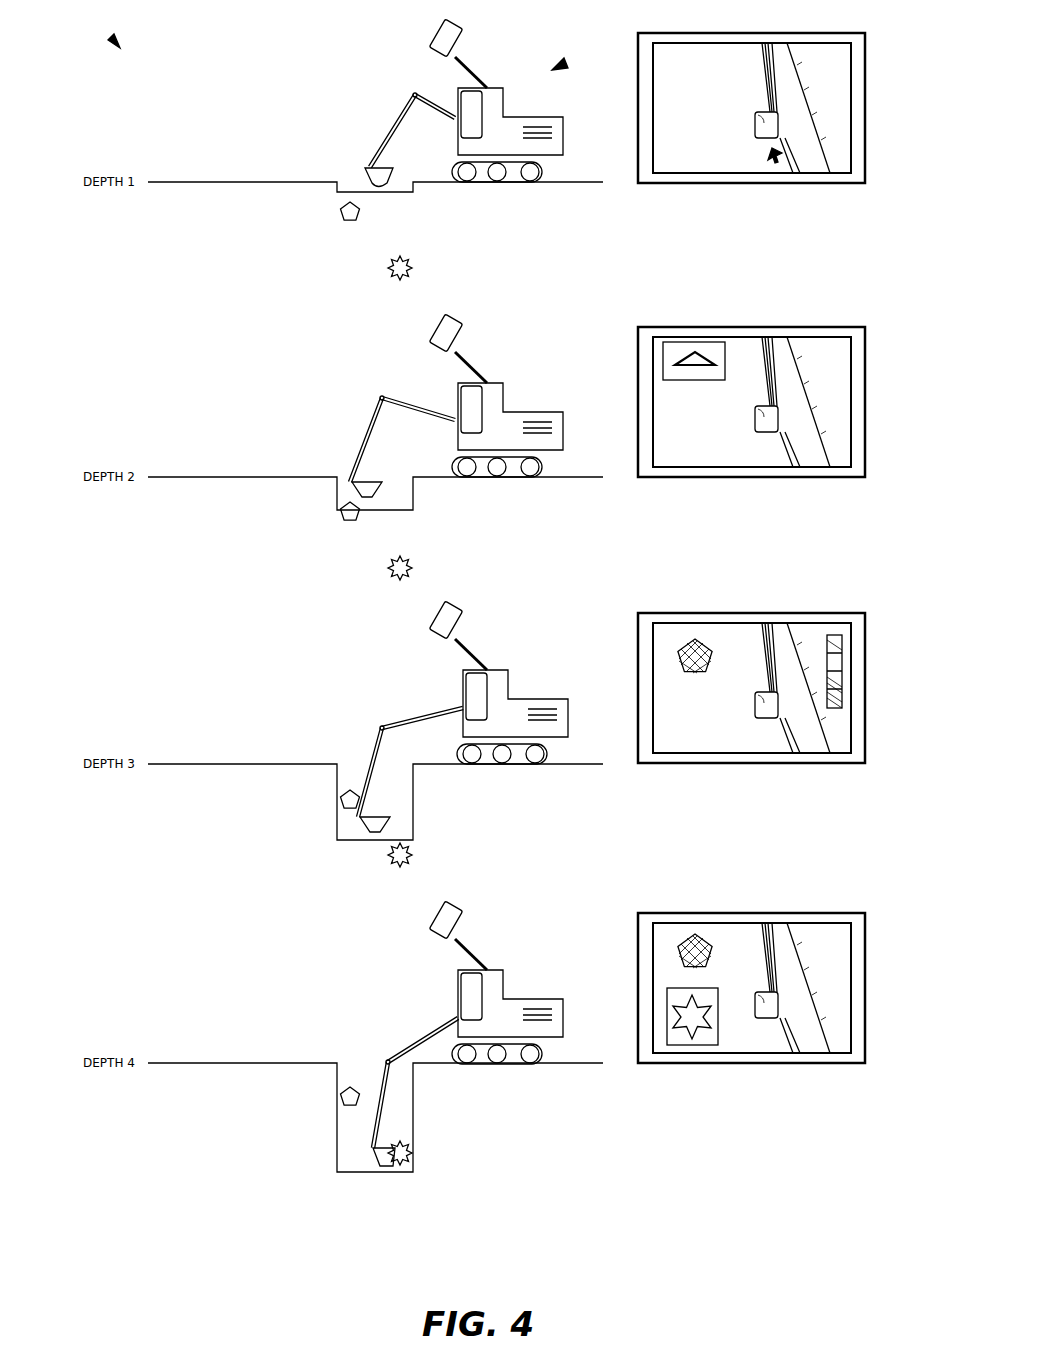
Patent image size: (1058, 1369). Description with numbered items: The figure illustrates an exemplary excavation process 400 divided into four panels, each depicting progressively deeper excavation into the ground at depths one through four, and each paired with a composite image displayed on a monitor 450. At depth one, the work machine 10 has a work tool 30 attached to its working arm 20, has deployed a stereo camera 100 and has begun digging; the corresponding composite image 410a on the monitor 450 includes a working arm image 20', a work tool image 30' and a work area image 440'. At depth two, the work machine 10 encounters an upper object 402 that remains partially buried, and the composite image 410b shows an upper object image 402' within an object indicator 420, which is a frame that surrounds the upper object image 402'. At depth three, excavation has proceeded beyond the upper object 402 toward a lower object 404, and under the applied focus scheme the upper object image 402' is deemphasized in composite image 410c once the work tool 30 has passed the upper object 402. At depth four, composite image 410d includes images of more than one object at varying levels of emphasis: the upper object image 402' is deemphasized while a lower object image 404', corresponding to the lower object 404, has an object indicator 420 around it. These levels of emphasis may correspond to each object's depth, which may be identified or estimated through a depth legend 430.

The excavation process 400 is at (116, 44).
The work machine 10 is at (562, 64).
The stereo camera 100 is at (458, 27).
The working arm 20 is at (393, 130).
The work tool 30 is at (346, 157).
The upper object 402 is at (311, 676).
The lower object 404 is at (397, 711).
The monitor 450 is at (866, 72).
The composite image 410a is at (707, 165).
The composite image 410b is at (695, 458).
The composite image 410c is at (710, 745).
The composite image 410d is at (770, 1045).
The working arm image 20' is at (745, 77).
The work tool image 30' is at (740, 124).
The work area image 440' is at (789, 186).
The upper object image 402' is at (646, 655).
The lower object image 404' is at (709, 1070).
The object indicator 420 is at (700, 380).
The depth legend 430 is at (840, 640).